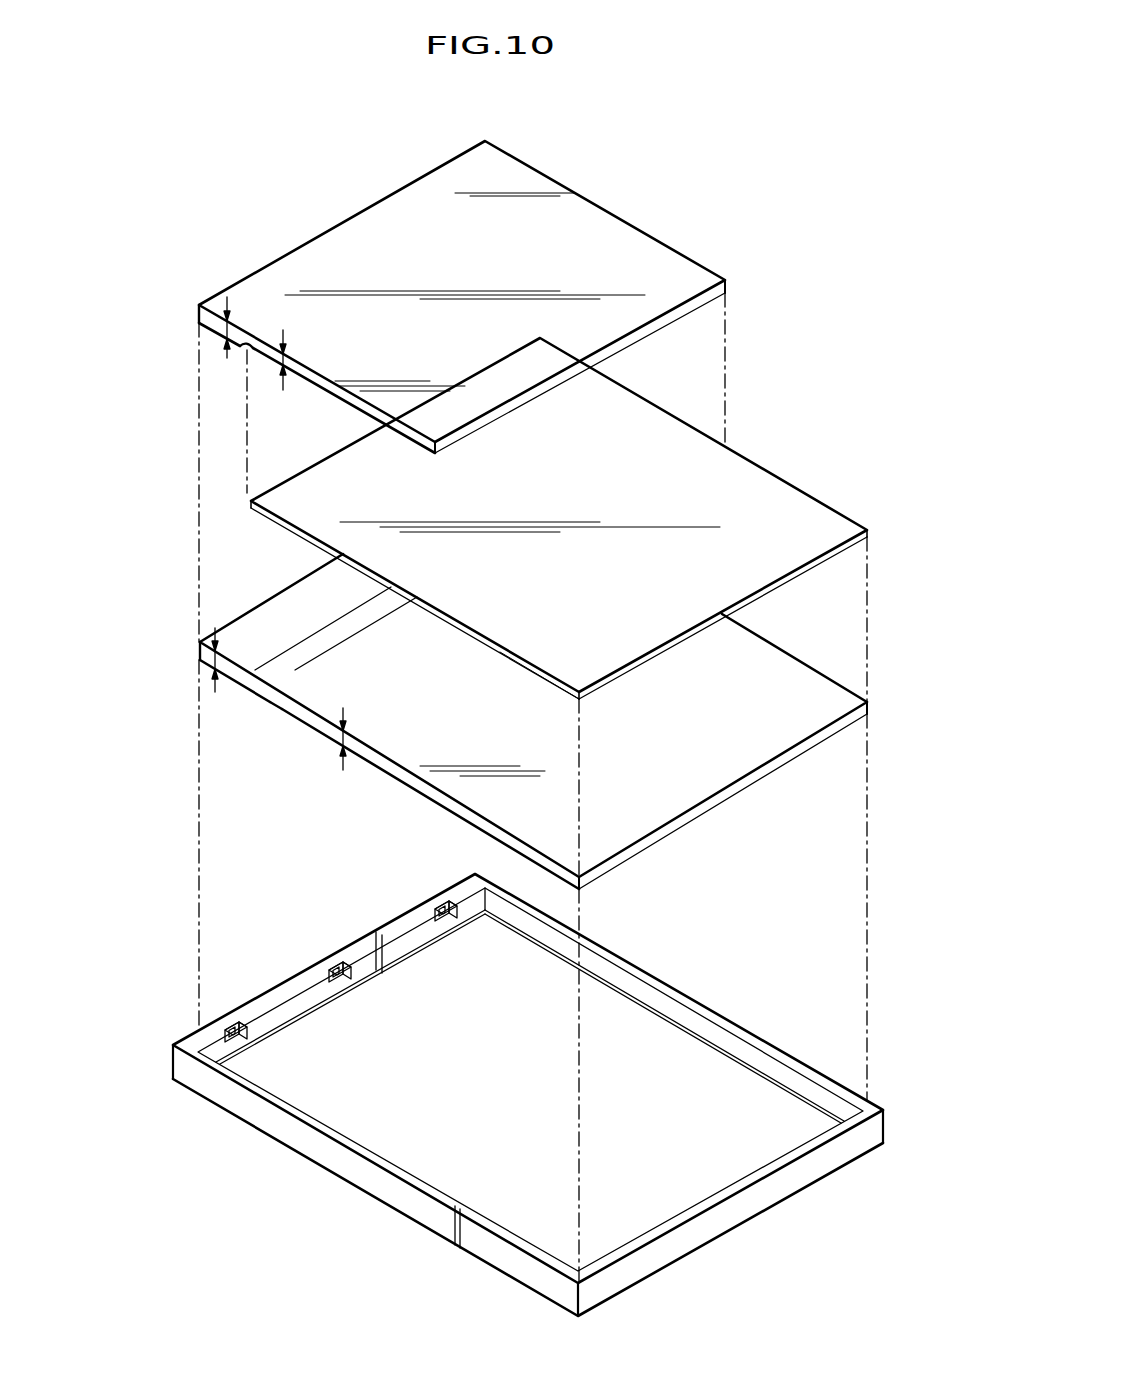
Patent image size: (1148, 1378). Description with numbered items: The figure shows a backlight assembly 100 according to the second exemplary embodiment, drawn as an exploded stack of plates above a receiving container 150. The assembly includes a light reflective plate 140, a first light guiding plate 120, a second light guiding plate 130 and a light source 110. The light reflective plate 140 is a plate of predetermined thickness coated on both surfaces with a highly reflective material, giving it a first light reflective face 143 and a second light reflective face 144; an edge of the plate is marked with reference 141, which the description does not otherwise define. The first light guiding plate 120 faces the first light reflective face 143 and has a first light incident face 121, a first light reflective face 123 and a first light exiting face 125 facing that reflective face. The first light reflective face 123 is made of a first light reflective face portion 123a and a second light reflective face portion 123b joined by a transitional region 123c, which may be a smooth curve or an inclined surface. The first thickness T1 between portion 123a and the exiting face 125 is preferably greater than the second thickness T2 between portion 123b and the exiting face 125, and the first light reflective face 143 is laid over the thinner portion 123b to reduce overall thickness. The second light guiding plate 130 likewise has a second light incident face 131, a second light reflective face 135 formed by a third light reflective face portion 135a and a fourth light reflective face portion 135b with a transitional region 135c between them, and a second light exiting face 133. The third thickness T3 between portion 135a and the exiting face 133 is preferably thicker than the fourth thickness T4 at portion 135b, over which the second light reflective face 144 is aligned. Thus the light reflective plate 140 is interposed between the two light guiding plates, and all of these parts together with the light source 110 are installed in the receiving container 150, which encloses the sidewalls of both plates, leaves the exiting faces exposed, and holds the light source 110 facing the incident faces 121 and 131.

The backlight assembly 100 is at (760, 160).
The light source 110 is at (225, 1027).
The first light guiding plate 120 is at (412, 160).
The first light incident face 121 is at (199, 312).
The first light reflective face 123 is at (112, 335).
The first light reflective face portion 123a is at (215, 333).
The second light reflective face portion 123b is at (307, 381).
The transitional region 123c is at (252, 349).
The first light exiting face 125 is at (603, 222).
The second light guiding plate 130 is at (835, 645).
The second light incident face 131 is at (199, 648).
The second light exiting face 133 is at (808, 752).
The second light reflective face 135 is at (818, 687).
The third light reflective face portion 135a is at (245, 650).
The fourth light reflective face portion 135b is at (403, 755).
The transitional region 135c is at (293, 670).
The light reflective plate 140 is at (830, 470).
The side surface of middle plate 141 is at (275, 486).
The first light reflective face 143 is at (543, 670).
The second light reflective face 144 is at (477, 640).
The receiving container 150 is at (780, 1215).
The first thickness T1 is at (246, 325).
The second thickness T2 is at (302, 359).
The third thickness T3 is at (223, 648).
The fourth thickness T4 is at (362, 739).